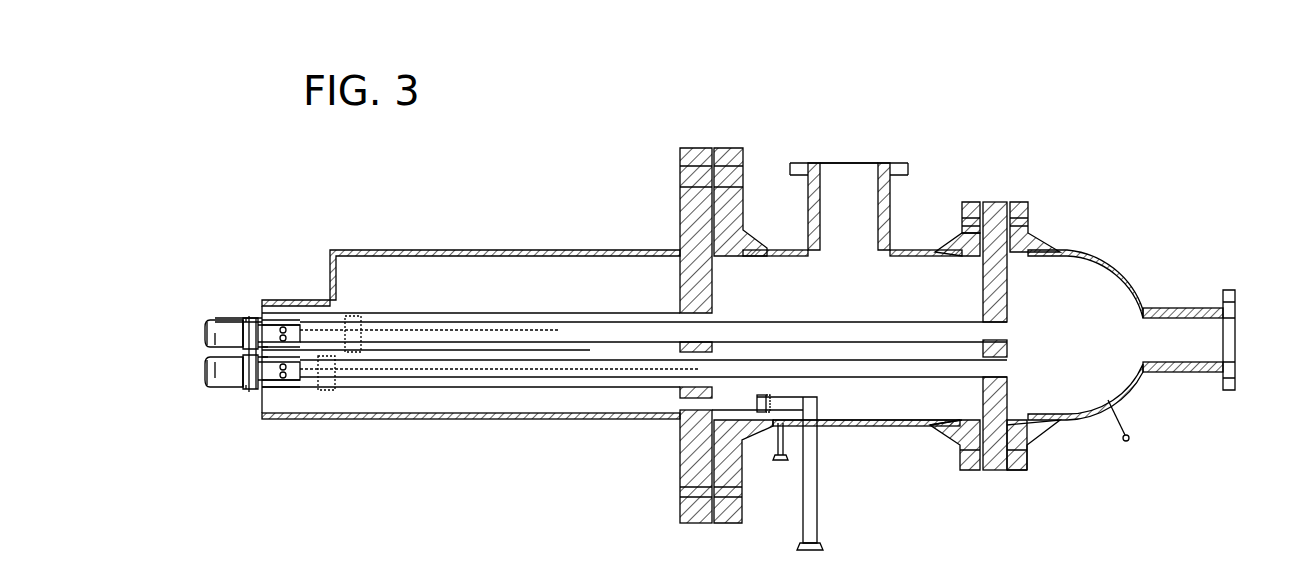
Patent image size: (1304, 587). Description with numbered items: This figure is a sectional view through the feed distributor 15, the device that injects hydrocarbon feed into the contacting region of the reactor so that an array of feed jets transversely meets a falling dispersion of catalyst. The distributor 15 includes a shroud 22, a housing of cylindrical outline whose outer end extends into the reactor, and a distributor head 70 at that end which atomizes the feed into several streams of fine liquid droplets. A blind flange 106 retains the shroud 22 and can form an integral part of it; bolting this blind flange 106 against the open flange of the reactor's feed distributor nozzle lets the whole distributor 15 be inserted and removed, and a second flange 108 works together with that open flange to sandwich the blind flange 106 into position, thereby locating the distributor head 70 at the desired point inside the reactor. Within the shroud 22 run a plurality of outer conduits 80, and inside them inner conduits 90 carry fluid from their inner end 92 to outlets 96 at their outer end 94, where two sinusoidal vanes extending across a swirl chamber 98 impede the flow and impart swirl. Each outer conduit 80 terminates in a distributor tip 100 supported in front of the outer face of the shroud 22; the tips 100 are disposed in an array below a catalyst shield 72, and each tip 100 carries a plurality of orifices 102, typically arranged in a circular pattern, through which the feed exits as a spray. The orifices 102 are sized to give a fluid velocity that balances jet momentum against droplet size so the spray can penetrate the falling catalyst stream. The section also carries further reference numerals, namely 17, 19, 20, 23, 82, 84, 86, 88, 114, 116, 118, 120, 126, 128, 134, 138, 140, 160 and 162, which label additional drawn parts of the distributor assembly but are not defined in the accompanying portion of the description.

The distributor 15 is at (405, 470).
The inlet nozzle 17 is at (845, 165).
The first chamber 19 is at (927, 292).
The outlet 20 is at (1182, 310).
The shroud 22 is at (482, 250).
The second chamber 23 is at (1080, 335).
The distributor head 70 is at (195, 262).
The catalyst shield 72 is at (215, 318).
The outer conduits 80 is at (372, 408).
The outer tube 82 is at (705, 350).
The flange plate 84 is at (246, 318).
The gasket 86 is at (250, 320).
The inner tube 88 is at (445, 360).
The inner conduits 90 is at (540, 362).
The inner end 92 is at (1012, 375).
The outer end 94 is at (258, 320).
The outlets 96 is at (250, 318).
The swirl chamber 98 is at (290, 330).
The distributor tips 100 is at (215, 375).
The orifices 102 is at (215, 330).
The blind flange 106 is at (695, 148).
The flange 108 is at (732, 148).
The housing wall 114 is at (862, 426).
The transition wall 116 is at (960, 428).
The drain pipe 118 is at (812, 487).
The flange 120 is at (1012, 270).
The dome 126 is at (1115, 265).
The flange bolt 128 is at (1030, 455).
The spacer 134 is at (262, 395).
The hanger 138 is at (780, 440).
The drain fitting 140 is at (1128, 428).
The coupling 160 is at (325, 362).
The fitting 162 is at (757, 400).